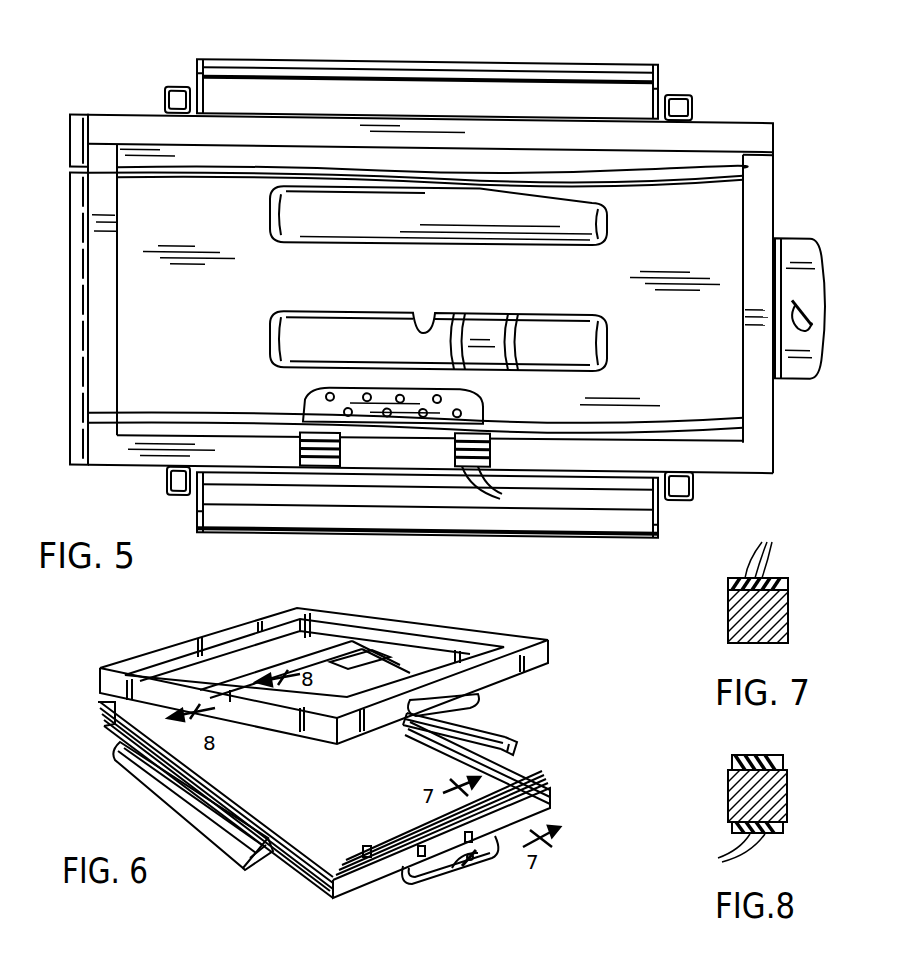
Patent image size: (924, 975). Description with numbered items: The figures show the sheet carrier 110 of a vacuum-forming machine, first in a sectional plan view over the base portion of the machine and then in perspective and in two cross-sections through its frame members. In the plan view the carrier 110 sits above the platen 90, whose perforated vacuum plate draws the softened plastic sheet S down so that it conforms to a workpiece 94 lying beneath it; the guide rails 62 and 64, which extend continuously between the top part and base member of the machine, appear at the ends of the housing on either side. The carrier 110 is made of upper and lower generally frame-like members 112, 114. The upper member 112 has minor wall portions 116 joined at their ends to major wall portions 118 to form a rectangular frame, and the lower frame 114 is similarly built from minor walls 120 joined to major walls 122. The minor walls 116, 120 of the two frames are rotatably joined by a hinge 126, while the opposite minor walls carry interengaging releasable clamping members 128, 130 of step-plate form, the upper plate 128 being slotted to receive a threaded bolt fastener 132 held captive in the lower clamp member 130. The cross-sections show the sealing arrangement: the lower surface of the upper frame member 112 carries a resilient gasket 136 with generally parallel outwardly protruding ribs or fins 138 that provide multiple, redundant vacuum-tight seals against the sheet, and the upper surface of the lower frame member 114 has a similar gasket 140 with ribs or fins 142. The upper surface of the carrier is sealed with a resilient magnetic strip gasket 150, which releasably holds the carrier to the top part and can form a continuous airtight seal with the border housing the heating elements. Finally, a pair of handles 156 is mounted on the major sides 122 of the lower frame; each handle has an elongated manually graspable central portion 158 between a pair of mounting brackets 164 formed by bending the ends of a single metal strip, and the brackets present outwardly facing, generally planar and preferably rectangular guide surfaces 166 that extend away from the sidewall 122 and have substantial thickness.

In FIG. 5, the guide rail 62 is at (692, 100).
In FIG. 5, the guide rail 64 is at (165, 90).
In FIG. 5, the platen 90 is at (320, 398).
In FIG. 5, the workpiece 94 is at (380, 238).
In FIG. 6, the carrier 110 is at (378, 612).
In FIG. 6, the upper frame member 112 is at (281, 742).
In FIG. 6, the lower frame member 114 is at (557, 800).
In FIG. 5, the minor wall portion 116 is at (118, 205).
In FIG. 6, the minor wall portion 116 is at (190, 660).
In FIG. 5, the major wall portion 118 is at (282, 442).
In FIG. 6, the major wall portion 118 is at (102, 690).
In FIG. 8, the major wall portion 118 is at (787, 792).
In FIG. 6, the minor wall 120 is at (266, 643).
In FIG. 7, the minor wall 120 is at (788, 607).
In FIG. 6, the major wall 122 is at (456, 750).
In FIG. 5, the hinge 126 is at (72, 219).
In FIG. 5, the upper clamp member 128 is at (799, 261).
In FIG. 6, the upper clamp member 128 is at (503, 686).
In FIG. 6, the lower clamp member 130 is at (408, 884).
In FIG. 5, the threaded bolt fastener 132 is at (820, 332).
In FIG. 6, the threaded bolt fastener 132 is at (467, 863).
In FIG. 6, the resilient gasket 136 is at (356, 738).
In FIG. 8, the resilient gasket 136 is at (780, 836).
In FIG. 8, the ribs or fins 138 is at (724, 853).
In FIG. 6, the gasket 140 is at (353, 863).
In FIG. 7, the gasket 140 is at (780, 582).
In FIG. 5, the ribs or fins 142 is at (503, 492).
In FIG. 7, the ribs or fins 142 is at (777, 552).
In FIG. 5, the resilient magnetic strip gasket 150 is at (760, 220).
In FIG. 6, the resilient magnetic strip gasket 150 is at (527, 642).
In FIG. 8, the resilient magnetic strip gasket 150 is at (787, 757).
In FIG. 5, the handle 156 is at (523, 63).
In FIG. 6, the handle 156 is at (180, 817).
In FIG. 5, the central portion 158 is at (298, 60).
In FIG. 6, the central portion 158 is at (142, 783).
In FIG. 5, the mounting bracket 164 is at (200, 60).
In FIG. 6, the mounting bracket 164 is at (118, 752).
In FIG. 5, the guide surface 166 is at (197, 78).
In FIG. 6, the guide surface 166 is at (262, 857).
In FIG. 5, the plastic sheet S is at (668, 264).